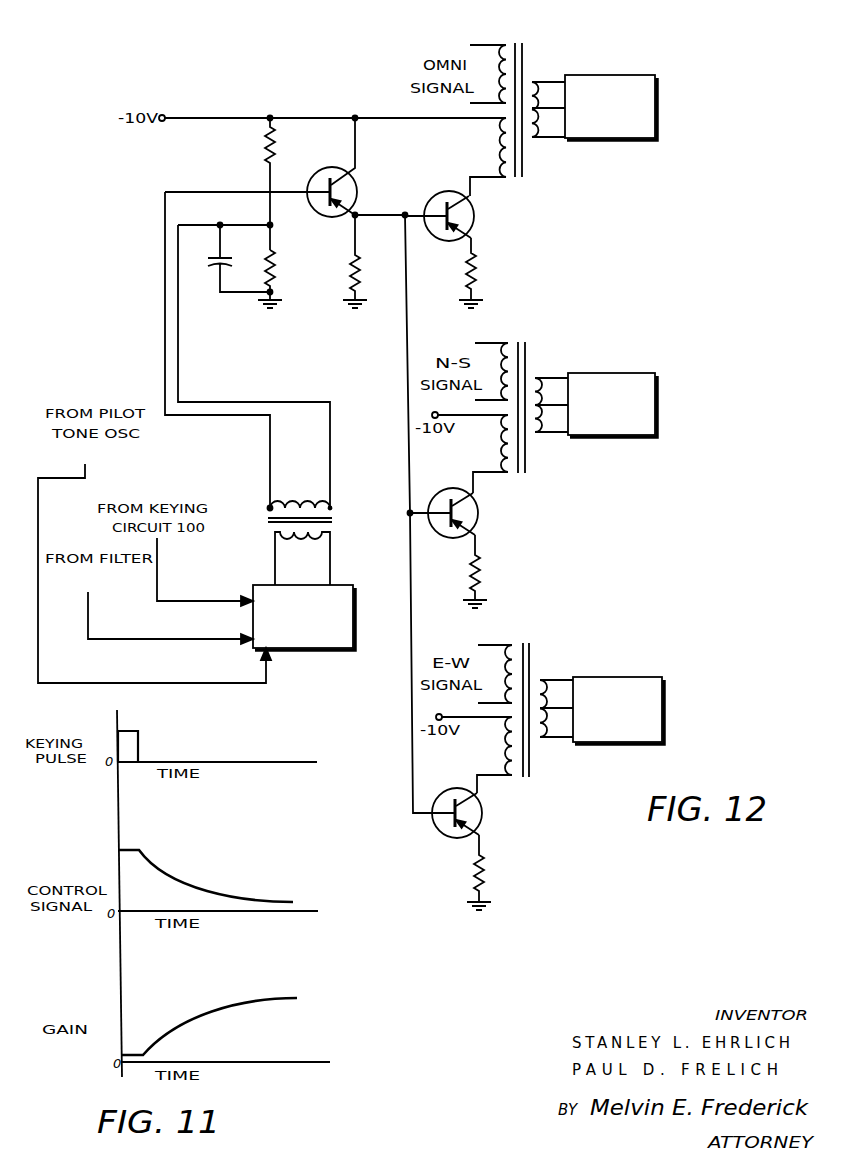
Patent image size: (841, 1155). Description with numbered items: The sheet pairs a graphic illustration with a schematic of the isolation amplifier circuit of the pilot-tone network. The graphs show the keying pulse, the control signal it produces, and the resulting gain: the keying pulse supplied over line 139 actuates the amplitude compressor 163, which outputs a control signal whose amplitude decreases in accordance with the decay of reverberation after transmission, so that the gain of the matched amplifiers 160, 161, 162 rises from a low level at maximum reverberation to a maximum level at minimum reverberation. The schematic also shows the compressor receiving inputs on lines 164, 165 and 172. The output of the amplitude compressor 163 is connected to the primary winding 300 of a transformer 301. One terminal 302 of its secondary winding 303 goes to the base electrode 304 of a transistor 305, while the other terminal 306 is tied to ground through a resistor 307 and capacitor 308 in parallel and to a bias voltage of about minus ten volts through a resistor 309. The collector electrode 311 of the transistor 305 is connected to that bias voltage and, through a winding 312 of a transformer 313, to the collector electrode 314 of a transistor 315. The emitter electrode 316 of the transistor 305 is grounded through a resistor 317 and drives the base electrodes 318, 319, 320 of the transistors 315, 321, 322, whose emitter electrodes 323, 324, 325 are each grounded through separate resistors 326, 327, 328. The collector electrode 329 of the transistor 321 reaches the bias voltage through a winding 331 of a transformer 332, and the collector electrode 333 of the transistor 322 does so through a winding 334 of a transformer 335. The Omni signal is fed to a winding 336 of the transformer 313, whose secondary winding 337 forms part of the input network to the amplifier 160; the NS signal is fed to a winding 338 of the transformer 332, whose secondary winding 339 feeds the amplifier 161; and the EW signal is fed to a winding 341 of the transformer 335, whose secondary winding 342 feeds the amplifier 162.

The line 139 is at (174, 604).
The matched amplifier 160 is at (604, 77).
The matched amplifier 161 is at (616, 374).
The matched amplifier 162 is at (616, 679).
The amplitude compressor 163 is at (315, 650).
The pilot tone oscillator input lead 164 is at (154, 564).
The filter input lead 165 is at (166, 609).
The filter signal lead 172 is at (158, 641).
The primary winding 300 is at (318, 548).
The transformer 301 is at (270, 523).
The terminal 302 is at (268, 508).
The secondary winding 303 is at (300, 494).
The base electrode 304 is at (313, 204).
The transistor 305 is at (346, 170).
The terminal 306 is at (331, 509).
The resistor 307 is at (278, 272).
The capacitor 308 is at (225, 258).
The resistor 309 is at (252, 155).
The collector electrode 311 is at (352, 175).
The winding 312 is at (496, 141).
The transformer 313 is at (525, 55).
The collector electrode 314 is at (471, 201).
The transistor 315 is at (445, 191).
The emitter electrode 316 is at (342, 216).
The resistor 317 is at (361, 272).
The base electrode 318 is at (441, 238).
The base electrode 319 is at (447, 534).
The base electrode 320 is at (440, 832).
The transistor 321 is at (460, 487).
The transistor 322 is at (460, 786).
The emitter electrode 323 is at (471, 227).
The emitter electrode 324 is at (474, 527).
The emitter electrode 325 is at (479, 826).
The resistor 326 is at (478, 270).
The resistor 327 is at (483, 569).
The resistor 328 is at (487, 869).
The collector electrode 329 is at (474, 498).
The winding 331 is at (497, 441).
The transformer 332 is at (528, 354).
The collector electrode 333 is at (479, 798).
The winding 334 is at (500, 744).
The transformer 335 is at (532, 654).
The winding 336 is at (480, 47).
The secondary winding 337 is at (542, 74).
The winding 338 is at (486, 343).
The secondary winding 339 is at (545, 369).
The winding 341 is at (515, 648).
The secondary winding 342 is at (546, 672).